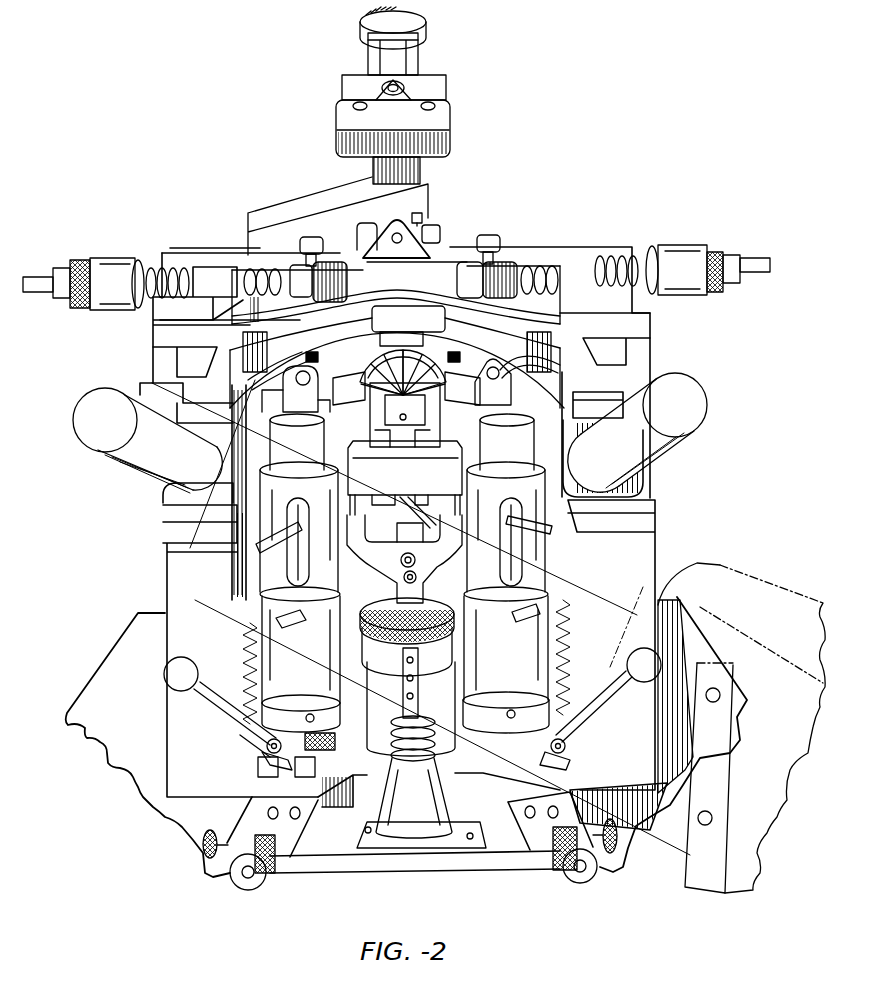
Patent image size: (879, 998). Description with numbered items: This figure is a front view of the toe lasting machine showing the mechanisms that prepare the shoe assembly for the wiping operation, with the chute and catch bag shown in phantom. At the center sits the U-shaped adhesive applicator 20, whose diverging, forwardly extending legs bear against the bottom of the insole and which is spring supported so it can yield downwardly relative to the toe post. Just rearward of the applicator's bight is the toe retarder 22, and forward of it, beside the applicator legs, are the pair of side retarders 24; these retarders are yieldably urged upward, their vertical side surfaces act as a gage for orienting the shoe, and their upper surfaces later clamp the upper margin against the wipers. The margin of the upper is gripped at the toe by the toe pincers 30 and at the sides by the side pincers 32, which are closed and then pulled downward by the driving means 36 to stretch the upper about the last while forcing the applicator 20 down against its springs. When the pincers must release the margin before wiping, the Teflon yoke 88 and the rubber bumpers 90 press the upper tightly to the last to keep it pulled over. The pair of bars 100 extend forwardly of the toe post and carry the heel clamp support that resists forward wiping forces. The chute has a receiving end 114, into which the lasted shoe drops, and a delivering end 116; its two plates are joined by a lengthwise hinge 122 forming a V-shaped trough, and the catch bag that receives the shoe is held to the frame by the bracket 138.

The adhesive applicator 20 is at (326, 393).
The toe retarder 22 is at (385, 352).
The side retarders 24 is at (425, 358).
The toe pincers 30 is at (393, 334).
The side pincers 32 is at (298, 355).
The driving means 36 is at (533, 472).
The Teflon yoke 88 is at (400, 292).
The rubber bumpers 90 is at (463, 288).
The bars 100 is at (686, 428).
The receiving end 114 is at (197, 560).
The delivering end 116 is at (597, 622).
The hinge 122 is at (195, 598).
The bracket 138 is at (773, 835).